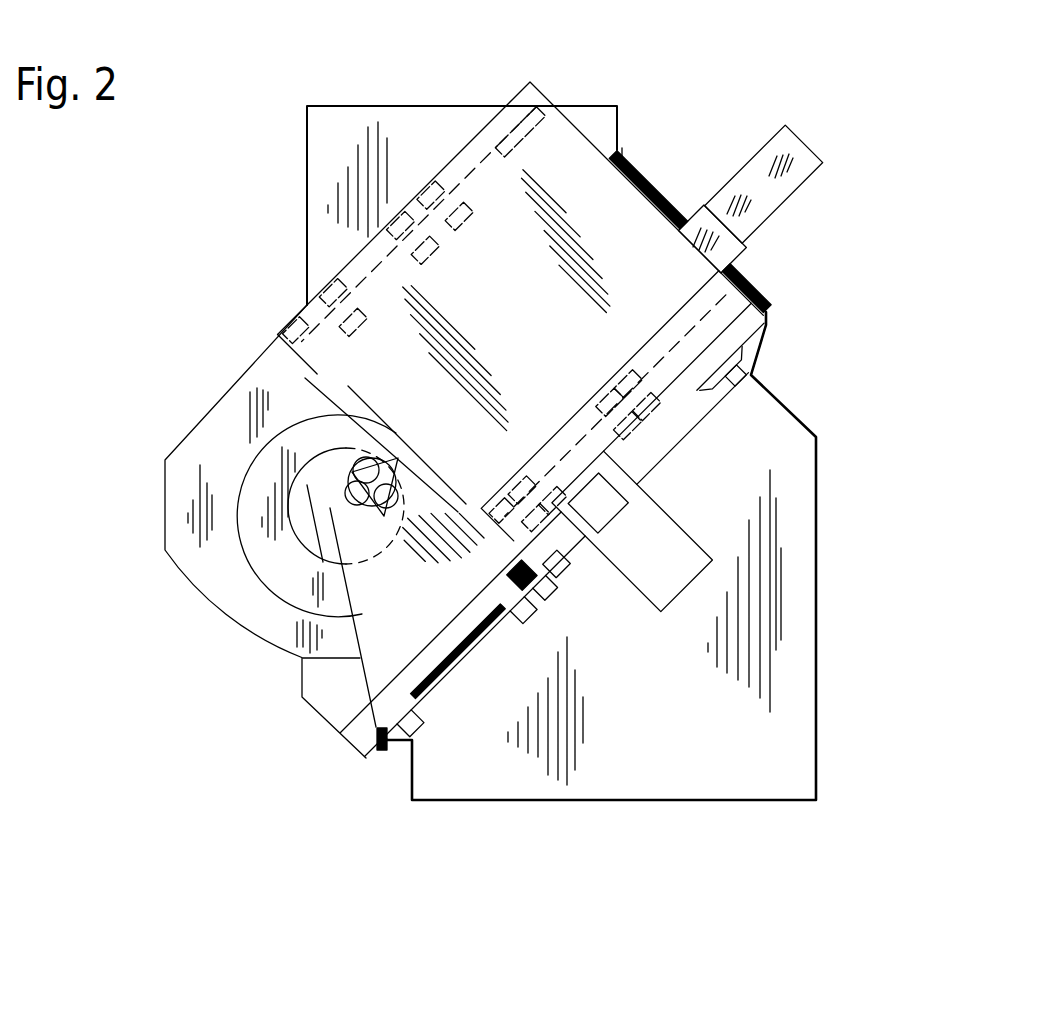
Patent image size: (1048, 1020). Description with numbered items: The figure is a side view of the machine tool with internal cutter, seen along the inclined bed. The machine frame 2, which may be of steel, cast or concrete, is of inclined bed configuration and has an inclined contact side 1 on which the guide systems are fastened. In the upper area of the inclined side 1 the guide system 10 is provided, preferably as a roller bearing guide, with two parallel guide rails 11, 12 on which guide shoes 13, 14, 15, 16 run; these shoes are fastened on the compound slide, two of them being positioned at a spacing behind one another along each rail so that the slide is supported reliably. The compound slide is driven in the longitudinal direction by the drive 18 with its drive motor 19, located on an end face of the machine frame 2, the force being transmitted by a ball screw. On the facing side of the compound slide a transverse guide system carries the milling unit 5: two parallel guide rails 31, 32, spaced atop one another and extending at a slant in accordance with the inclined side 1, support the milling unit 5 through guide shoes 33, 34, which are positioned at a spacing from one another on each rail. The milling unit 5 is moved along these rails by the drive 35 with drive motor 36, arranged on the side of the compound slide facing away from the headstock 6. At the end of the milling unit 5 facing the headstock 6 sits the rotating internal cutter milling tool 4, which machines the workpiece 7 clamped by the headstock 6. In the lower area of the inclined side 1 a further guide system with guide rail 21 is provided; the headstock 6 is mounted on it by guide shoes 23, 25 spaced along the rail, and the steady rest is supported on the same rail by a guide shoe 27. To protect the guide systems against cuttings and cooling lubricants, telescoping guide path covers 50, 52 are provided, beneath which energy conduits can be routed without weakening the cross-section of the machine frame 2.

The inclined contact side 1 is at (707, 413).
The machine frame 2 is at (790, 717).
The internal cutter milling tool 4 is at (250, 508).
The milling unit 5 is at (263, 360).
The headstock 6 is at (398, 660).
The workpiece 7 is at (347, 455).
The guide system 10 is at (683, 440).
The guide rail 11 is at (747, 373).
The guide rail 12 is at (563, 570).
The guide shoe 13 is at (707, 704).
The guide shoe 14 is at (887, 320).
The guide shoe 15 is at (570, 557).
The guide shoe 16 is at (742, 353).
The drive 18 is at (652, 560).
The drive motor 19 is at (608, 515).
The guide rail 21 is at (523, 615).
The guide shoe 23 is at (488, 720).
The guide shoe 25 is at (488, 720).
The guide shoe 27 is at (509, 624).
The guide rail 31 is at (495, 152).
The guide rail 32 is at (665, 355).
The guide shoe 33 is at (322, 298).
The guide shoe 34 is at (530, 473).
The drive 35 is at (807, 165).
The drive motor 36 is at (771, 163).
The guide path cover 50 is at (672, 212).
The guide path cover 52 is at (382, 752).